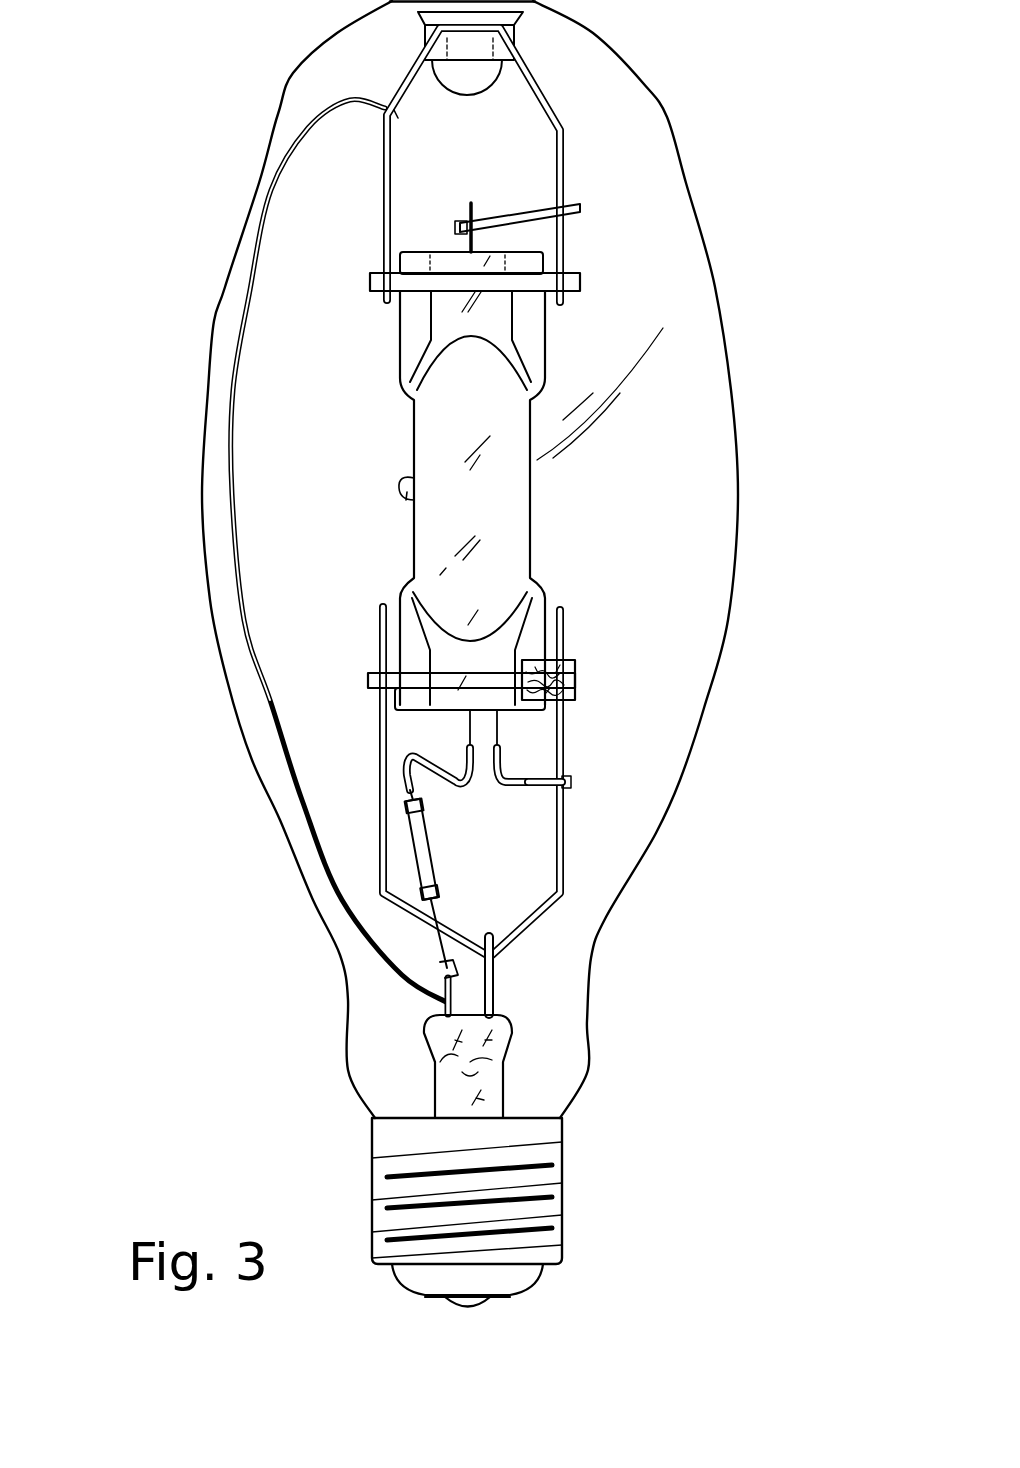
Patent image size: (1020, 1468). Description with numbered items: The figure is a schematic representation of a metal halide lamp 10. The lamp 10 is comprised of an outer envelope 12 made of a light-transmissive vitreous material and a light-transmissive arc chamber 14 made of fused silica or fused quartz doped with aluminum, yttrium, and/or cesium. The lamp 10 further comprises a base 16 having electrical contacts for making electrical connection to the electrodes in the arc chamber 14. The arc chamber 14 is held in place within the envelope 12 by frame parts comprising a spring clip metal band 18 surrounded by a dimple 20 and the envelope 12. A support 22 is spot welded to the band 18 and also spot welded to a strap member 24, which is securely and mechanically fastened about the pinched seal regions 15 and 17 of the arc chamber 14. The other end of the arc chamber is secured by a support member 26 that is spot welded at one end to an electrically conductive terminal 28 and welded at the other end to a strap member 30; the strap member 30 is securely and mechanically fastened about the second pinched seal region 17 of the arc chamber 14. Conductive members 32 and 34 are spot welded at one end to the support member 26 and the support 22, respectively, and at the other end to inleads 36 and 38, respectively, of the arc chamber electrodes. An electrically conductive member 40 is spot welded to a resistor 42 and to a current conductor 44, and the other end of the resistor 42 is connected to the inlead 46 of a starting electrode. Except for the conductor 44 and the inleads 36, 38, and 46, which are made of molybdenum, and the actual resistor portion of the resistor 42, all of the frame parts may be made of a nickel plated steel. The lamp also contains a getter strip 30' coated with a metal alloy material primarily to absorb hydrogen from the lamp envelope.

The lamp 10 is at (716, 80).
The outer envelope 12 is at (718, 293).
The arc chamber 14 is at (478, 498).
The pinched seal region 15 is at (530, 328).
The base 16 is at (562, 1188).
The second pinched seal region 17 is at (543, 607).
The spring clip metal band 18 is at (480, 48).
The dimple 20 is at (447, 82).
The support 22 is at (563, 118).
The strap member 24 is at (413, 287).
The support member 26 is at (380, 720).
The electrically conductive terminal 28 is at (494, 985).
The strap member 30 is at (431, 679).
The getter strip 30' is at (585, 676).
The conductive member 32 is at (532, 789).
The conductive member 34 is at (520, 220).
The inlead 36 is at (505, 737).
The inlead 38 is at (470, 203).
The electrically conductive member 40 is at (445, 1006).
The resistor 42 is at (425, 850).
The current conductor 44 is at (235, 320).
The inlead 46 is at (466, 730).